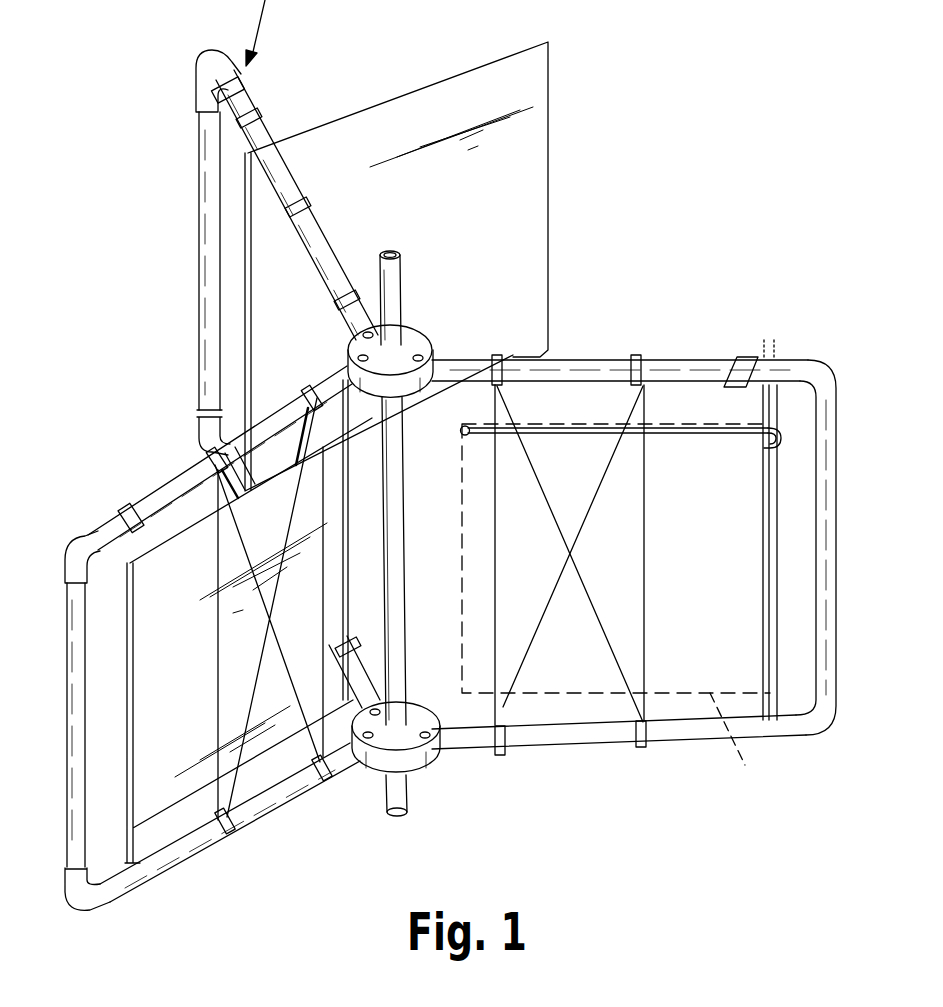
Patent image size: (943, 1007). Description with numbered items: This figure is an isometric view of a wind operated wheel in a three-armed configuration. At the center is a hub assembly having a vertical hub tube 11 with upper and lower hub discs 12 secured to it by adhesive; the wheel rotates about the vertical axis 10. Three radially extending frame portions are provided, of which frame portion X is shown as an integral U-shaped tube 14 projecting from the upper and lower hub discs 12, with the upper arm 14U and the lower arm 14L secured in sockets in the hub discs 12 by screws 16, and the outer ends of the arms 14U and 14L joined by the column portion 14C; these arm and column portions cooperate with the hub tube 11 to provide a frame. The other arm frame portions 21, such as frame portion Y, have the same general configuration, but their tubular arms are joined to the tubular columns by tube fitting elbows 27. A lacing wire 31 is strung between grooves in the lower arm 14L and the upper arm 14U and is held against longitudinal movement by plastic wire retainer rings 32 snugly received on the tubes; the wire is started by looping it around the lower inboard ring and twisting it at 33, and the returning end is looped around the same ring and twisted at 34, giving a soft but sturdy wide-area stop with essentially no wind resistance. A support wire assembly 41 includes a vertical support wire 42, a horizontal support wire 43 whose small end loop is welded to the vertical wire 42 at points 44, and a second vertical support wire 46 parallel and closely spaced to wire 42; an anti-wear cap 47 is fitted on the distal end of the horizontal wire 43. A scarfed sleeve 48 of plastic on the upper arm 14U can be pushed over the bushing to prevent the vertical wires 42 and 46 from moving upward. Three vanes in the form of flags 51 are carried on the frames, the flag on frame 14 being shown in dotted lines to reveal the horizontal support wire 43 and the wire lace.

The axis 10 is at (392, 252).
The vertical hub tube 11 is at (402, 598).
The hub discs 12 is at (408, 337).
The arm frame portion 14 is at (666, 520).
The upper arm 14U is at (592, 358).
The lower arm 14L is at (583, 745).
The column portion 14C is at (838, 470).
The screws 16 is at (424, 352).
The arm frame portions 21 is at (192, 500).
The tube fitting elbows 27 is at (78, 545).
The lacing wire 31 is at (646, 590).
The wire retainer rings 32 is at (498, 354).
The twist 33 is at (495, 705).
The twist 34 is at (518, 708).
The support wire assembly 41 is at (606, 467).
The vertical support wire 42 is at (765, 565).
The horizontal support wire 43 is at (676, 437).
The weld points 44 is at (758, 424).
The vertical support wire 46 is at (781, 600).
The anti-wear cap 47 is at (462, 440).
The scarfed sleeve 48 is at (236, 100).
The flags 51 is at (540, 103).
The frame portion X is at (707, 792).
The frame portion Y is at (190, 880).